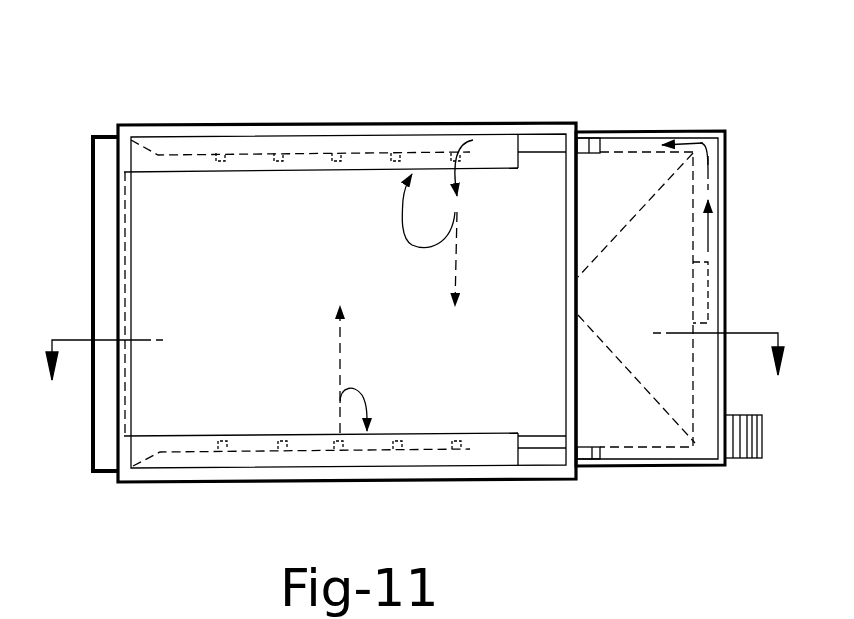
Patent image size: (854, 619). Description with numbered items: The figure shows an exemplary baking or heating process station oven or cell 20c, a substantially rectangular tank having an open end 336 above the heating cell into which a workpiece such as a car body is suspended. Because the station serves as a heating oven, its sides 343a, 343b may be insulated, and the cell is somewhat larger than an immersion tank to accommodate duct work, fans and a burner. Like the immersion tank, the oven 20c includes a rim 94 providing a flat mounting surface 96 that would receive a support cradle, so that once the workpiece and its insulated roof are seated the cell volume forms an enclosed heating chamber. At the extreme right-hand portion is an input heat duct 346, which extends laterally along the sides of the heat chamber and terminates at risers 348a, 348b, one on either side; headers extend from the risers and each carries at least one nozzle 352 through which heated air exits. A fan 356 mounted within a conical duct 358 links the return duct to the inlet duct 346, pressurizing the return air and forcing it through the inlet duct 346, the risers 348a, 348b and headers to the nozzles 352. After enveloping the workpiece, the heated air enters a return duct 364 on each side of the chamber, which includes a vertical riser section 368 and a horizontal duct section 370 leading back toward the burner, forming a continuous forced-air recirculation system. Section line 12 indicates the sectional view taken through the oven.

The section line 12- 12 is at (414, 376).
The heating oven 20c is at (145, 505).
The rim 94 is at (429, 108).
The flat mounting surface 96 is at (503, 132).
The open end 336 is at (133, 247).
The side 343a is at (623, 463).
The side 343b is at (623, 133).
The input heat duct 346 is at (655, 142).
The riser 348a is at (597, 463).
The riser 348b is at (590, 143).
The nozzle 352 is at (243, 453).
The fan 356 is at (708, 292).
The conical duct 358 is at (632, 224).
The return duct 364 is at (329, 153).
The vertical riser section 368 is at (104, 275).
The horizontal duct section 370 is at (540, 160).